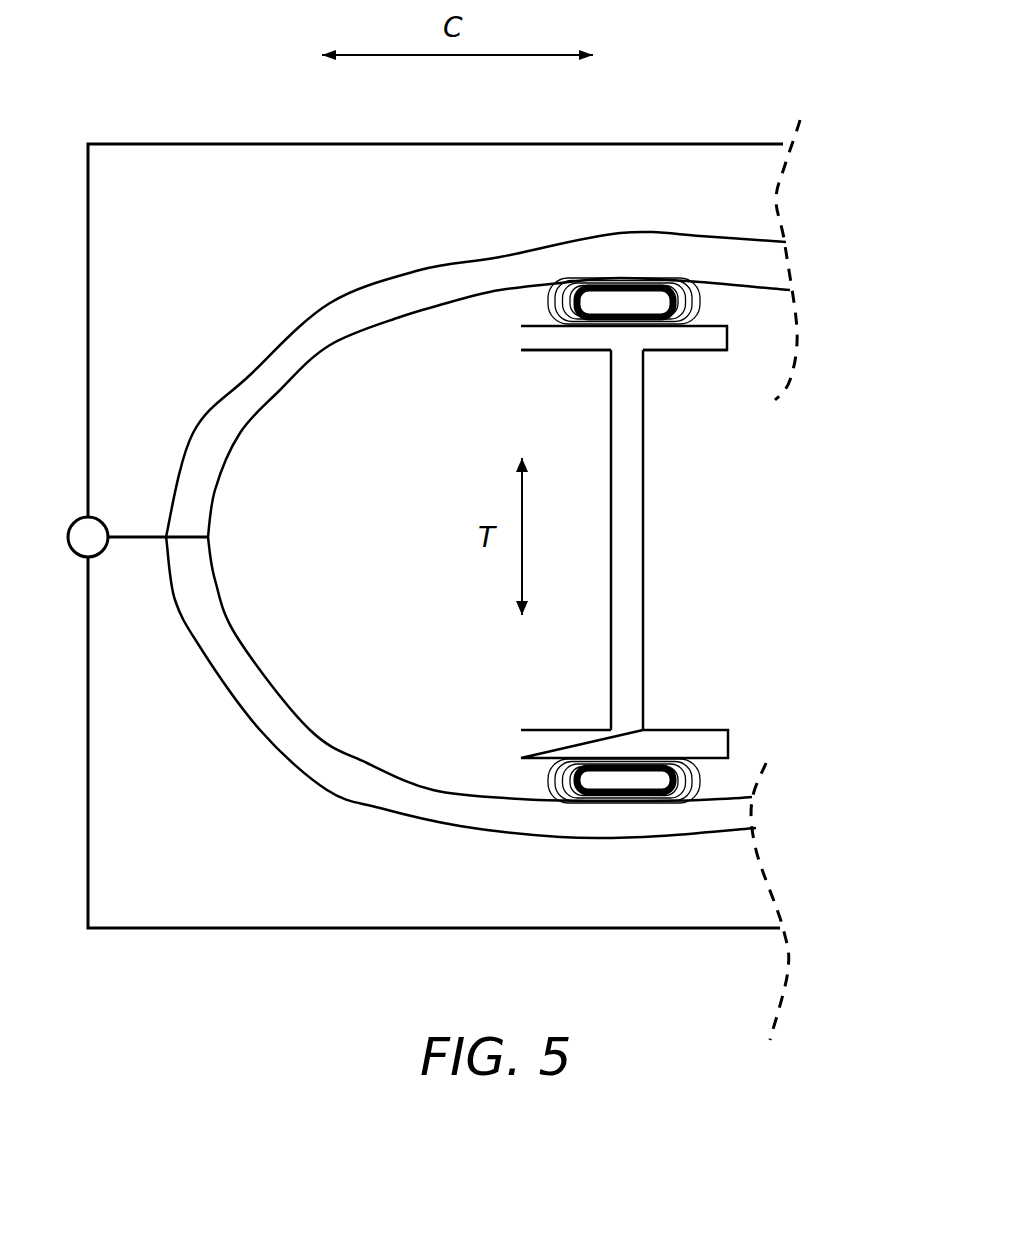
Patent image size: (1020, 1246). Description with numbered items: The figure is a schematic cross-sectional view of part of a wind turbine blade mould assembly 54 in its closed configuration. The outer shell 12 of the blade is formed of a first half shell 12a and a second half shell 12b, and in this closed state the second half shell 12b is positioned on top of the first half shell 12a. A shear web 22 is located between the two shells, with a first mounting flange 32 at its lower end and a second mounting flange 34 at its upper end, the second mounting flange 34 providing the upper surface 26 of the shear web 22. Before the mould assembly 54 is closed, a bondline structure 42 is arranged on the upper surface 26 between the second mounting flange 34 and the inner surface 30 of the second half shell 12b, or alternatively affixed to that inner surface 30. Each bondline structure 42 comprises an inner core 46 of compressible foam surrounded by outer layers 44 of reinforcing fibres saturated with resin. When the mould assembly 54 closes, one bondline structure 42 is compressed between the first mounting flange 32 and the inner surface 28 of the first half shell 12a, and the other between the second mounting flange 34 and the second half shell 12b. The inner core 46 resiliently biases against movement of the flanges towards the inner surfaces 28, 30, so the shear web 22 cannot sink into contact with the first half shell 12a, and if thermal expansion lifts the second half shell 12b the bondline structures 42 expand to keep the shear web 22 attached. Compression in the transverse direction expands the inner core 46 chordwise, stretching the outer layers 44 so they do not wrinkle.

The mould assembly 54 is at (196, 136).
The outer shell 12 is at (456, 535).
The first half shell 12a is at (461, 687).
The second half shell 12b is at (478, 384).
The inner surface of the second half shell 30 is at (449, 310).
The inner surface of the first half shell 28 is at (372, 762).
The shear web 22 is at (656, 545).
The upper surface of the shear web 26 is at (712, 322).
The second mounting flange 34 is at (672, 340).
The first mounting flange 32 is at (672, 735).
The bondline structure 42 is at (530, 301).
The outer layers 44 is at (618, 542).
The inner core 46 is at (642, 280).